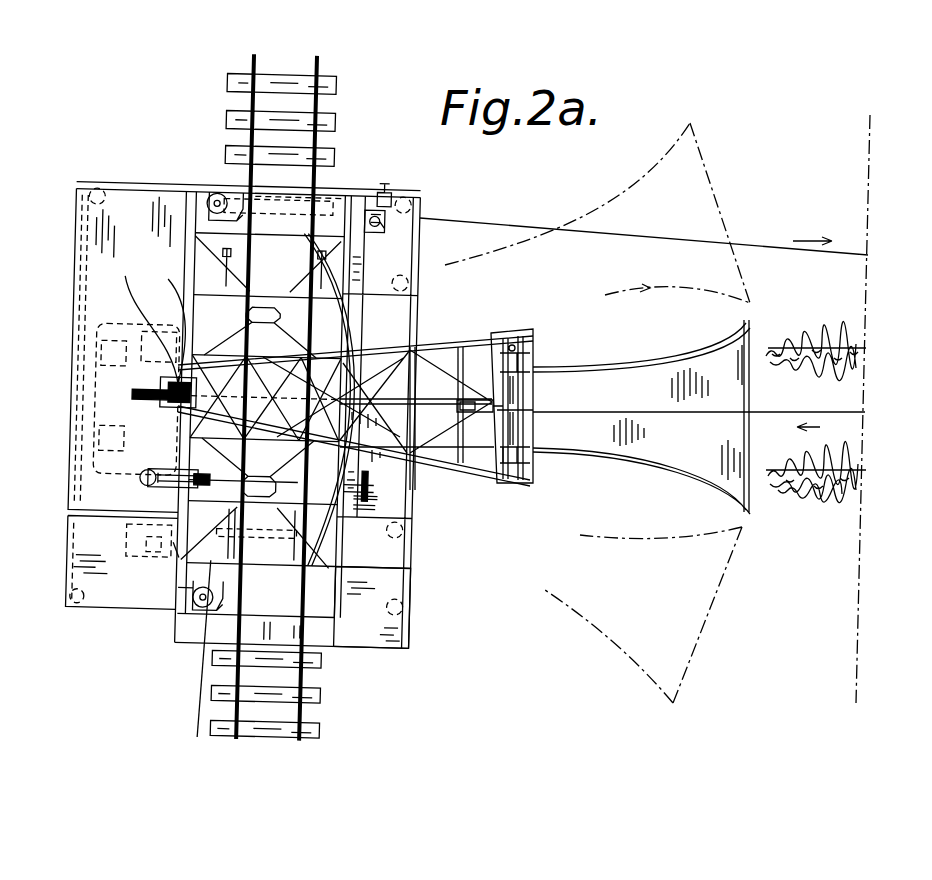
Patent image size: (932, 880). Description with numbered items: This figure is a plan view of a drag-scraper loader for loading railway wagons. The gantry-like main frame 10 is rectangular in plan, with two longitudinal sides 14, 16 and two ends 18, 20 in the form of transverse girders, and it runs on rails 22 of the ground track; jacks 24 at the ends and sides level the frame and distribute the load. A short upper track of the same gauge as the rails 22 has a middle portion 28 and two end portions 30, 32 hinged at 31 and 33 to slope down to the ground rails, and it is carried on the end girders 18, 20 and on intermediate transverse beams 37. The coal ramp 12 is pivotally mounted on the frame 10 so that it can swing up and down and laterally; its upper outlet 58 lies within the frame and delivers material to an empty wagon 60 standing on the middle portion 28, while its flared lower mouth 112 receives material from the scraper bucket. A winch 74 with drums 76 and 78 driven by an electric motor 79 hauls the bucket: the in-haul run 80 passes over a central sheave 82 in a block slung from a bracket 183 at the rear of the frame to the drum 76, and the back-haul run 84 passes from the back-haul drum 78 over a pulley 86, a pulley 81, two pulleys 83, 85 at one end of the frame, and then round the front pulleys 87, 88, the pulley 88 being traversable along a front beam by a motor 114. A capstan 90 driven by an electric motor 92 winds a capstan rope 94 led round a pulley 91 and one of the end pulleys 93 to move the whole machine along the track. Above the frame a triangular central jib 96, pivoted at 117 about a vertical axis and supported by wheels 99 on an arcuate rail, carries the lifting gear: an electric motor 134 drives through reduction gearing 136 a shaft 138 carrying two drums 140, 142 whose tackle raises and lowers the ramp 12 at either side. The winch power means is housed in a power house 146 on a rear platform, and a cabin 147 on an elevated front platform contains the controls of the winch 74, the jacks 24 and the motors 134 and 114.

The main frame 10 is at (182, 169).
The coal ramp 12 is at (638, 162).
The longitudinal side 14 is at (187, 203).
The longitudinal side 16 is at (340, 600).
The end transverse girder 18 is at (203, 187).
The end transverse girder 20 is at (197, 612).
The rails 22 is at (254, 64).
The jacks 24 is at (95, 190).
The middle portion of upper track 28 is at (312, 221).
The end portion of upper track 30 is at (265, 694).
The hinge 31 is at (290, 607).
The end portion of upper track 32 is at (281, 113).
The hinge 33 is at (250, 184).
The transverse beam 37 is at (257, 505).
The outlet 58 is at (247, 367).
The wagon 60 is at (225, 272).
The winch 74 is at (118, 330).
The drum 76 is at (133, 427).
The back-haul drum 78 is at (108, 552).
The electric motor 79 is at (165, 321).
The in-haul run 80 is at (797, 412).
The pulley 81 is at (173, 473).
The central sheave 82 is at (142, 322).
The pulley 83 is at (200, 478).
The back-haul run 84 is at (762, 243).
The pulley 85 is at (370, 507).
The pulley 86 is at (142, 470).
The pulley 87 is at (372, 505).
The movable pulley 88 is at (380, 222).
The capstan 90 is at (183, 557).
The pulley 91 is at (135, 530).
The electric motor 92 is at (147, 555).
The pulley 93 is at (217, 197).
The capstan rope 94 is at (203, 683).
The jib 96 is at (433, 343).
The wheels 99 is at (350, 347).
The mouth 112 is at (753, 340).
The motor 114 is at (397, 187).
The pivot 117 is at (157, 345).
The electric motor 134 is at (463, 401).
The reduction gearing 136 is at (515, 413).
The shaft 138 is at (515, 385).
The drum 140 is at (518, 362).
The drum 142 is at (518, 460).
The power house 146 is at (120, 196).
The cabin 147 is at (400, 628).
The bracket 183 is at (165, 390).